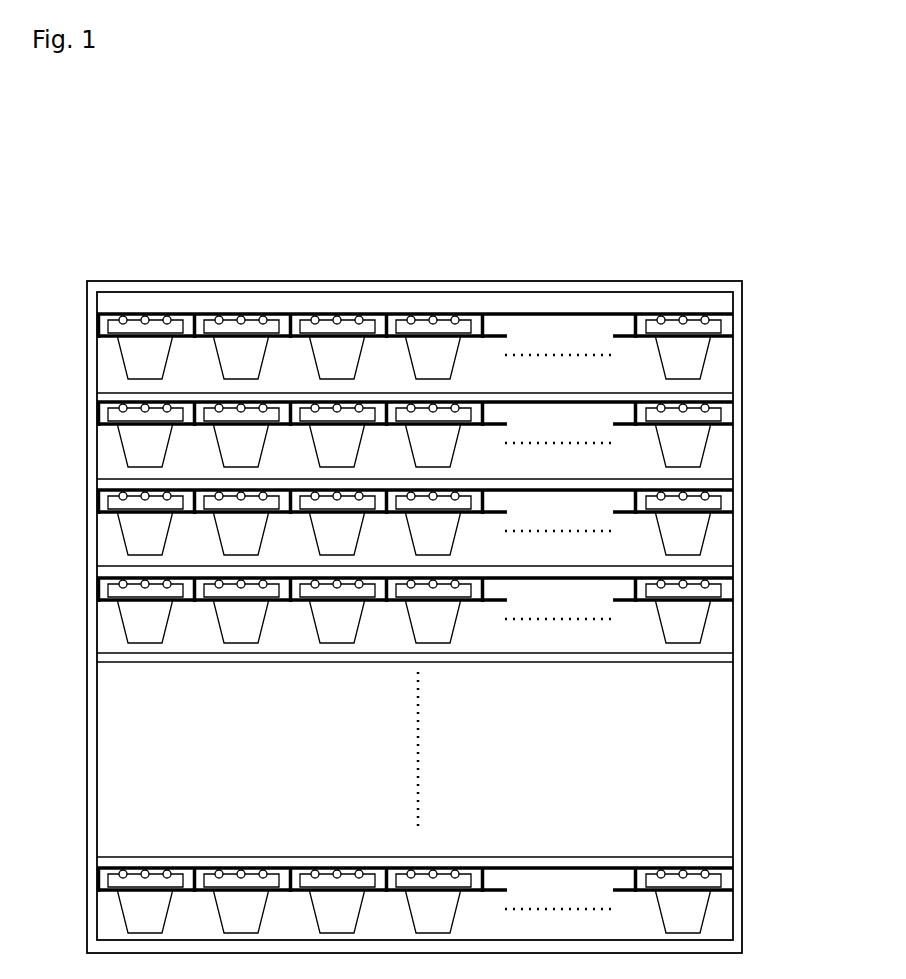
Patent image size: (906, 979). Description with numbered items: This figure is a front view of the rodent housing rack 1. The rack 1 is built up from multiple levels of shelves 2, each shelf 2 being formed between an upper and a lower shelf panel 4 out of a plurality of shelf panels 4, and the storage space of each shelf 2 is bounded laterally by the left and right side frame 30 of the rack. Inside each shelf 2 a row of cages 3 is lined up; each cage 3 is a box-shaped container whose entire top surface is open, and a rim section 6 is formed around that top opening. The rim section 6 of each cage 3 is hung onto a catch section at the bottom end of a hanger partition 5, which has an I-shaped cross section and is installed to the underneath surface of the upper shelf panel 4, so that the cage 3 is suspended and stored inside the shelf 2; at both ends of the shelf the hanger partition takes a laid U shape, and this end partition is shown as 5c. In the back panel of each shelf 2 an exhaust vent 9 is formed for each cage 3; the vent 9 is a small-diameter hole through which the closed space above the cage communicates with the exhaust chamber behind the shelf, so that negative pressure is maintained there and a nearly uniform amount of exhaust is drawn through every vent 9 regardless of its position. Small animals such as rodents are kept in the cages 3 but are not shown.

The rodent housing rack 1 is at (631, 260).
The shelf 2 is at (525, 332).
The cage 3 is at (693, 357).
The shelf panel 4 is at (716, 477).
The hanger partition 5 is at (485, 588).
The end lead terminal 5c is at (627, 601).
The rim section 6 is at (468, 884).
The exhaust vent 9 is at (683, 869).
The side frame 30 is at (741, 553).